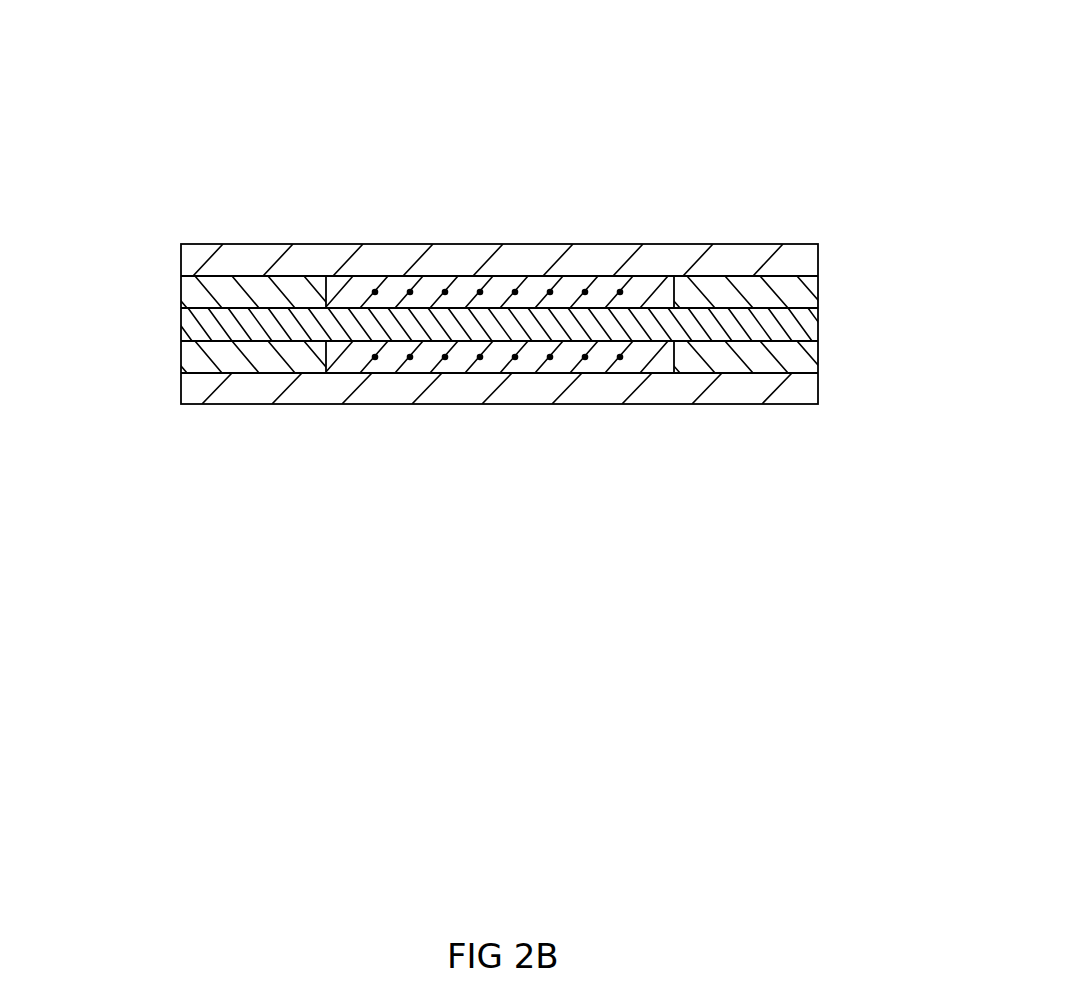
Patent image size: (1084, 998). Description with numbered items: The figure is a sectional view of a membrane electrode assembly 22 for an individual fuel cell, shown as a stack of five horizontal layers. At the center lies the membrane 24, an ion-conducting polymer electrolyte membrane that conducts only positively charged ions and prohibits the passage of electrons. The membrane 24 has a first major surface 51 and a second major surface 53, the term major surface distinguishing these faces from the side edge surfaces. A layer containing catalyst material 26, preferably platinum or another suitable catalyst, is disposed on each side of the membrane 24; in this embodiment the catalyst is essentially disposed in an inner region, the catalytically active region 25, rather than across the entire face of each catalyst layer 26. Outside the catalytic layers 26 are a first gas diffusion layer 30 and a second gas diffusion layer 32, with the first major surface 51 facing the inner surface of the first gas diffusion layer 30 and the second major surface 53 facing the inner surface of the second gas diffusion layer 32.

The membrane electrode assembly 22 is at (742, 92).
The membrane 24 is at (818, 322).
The catalytically active region 25 is at (448, 290).
The layer containing catalyst material 26 is at (500, 328).
The first gas diffusion layer 30 is at (818, 386).
The second gas diffusion layer 32 is at (818, 258).
The first major surface 51 is at (182, 339).
The second major surface 53 is at (182, 306).